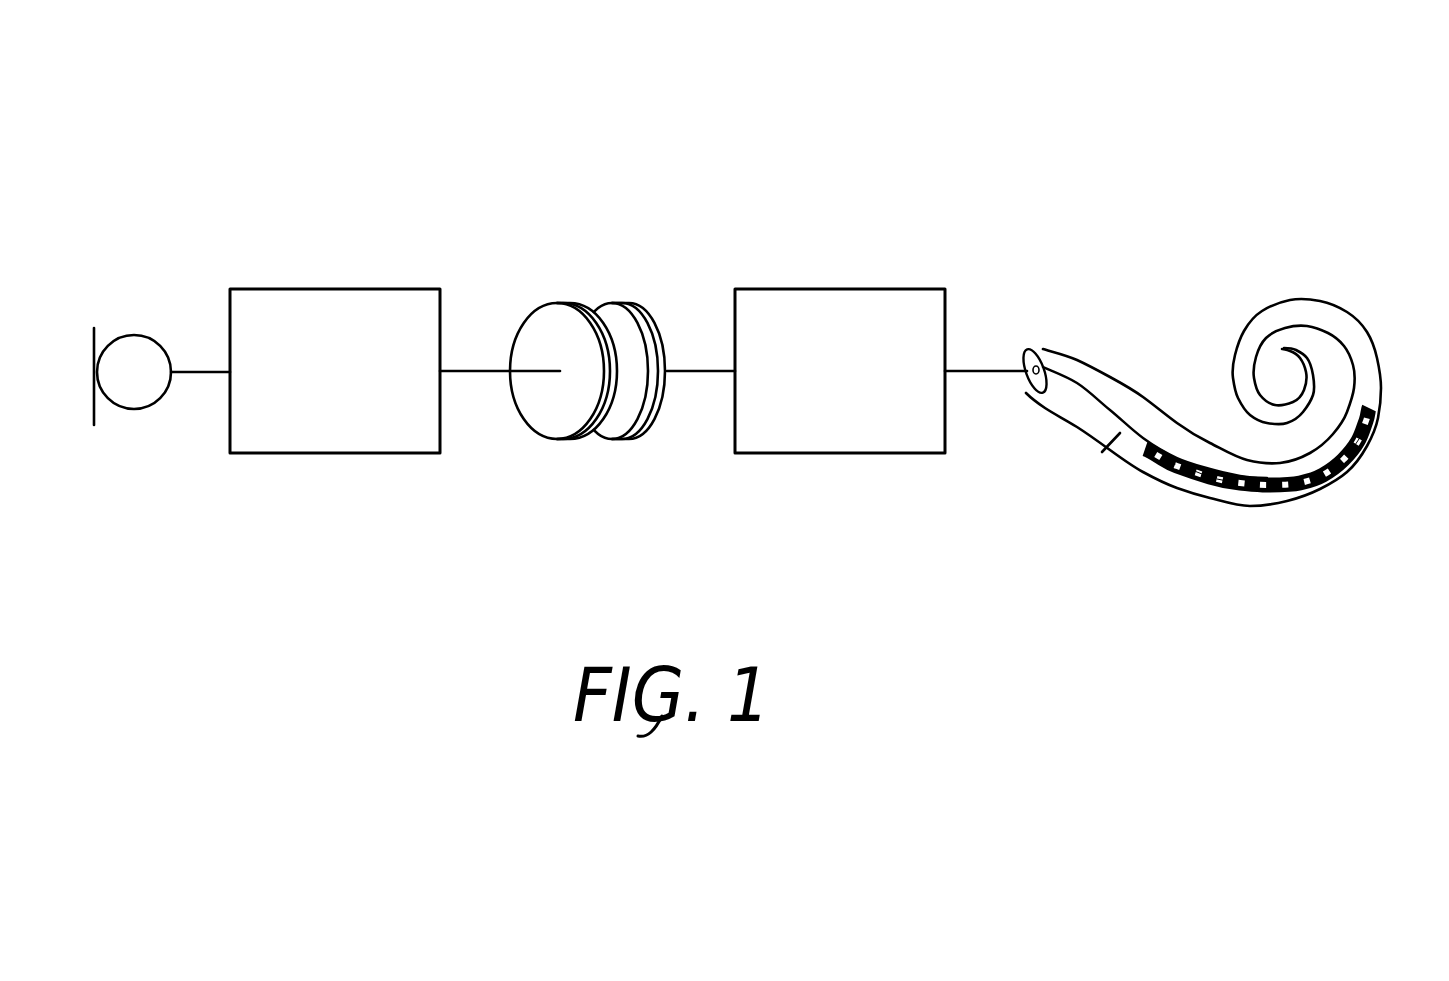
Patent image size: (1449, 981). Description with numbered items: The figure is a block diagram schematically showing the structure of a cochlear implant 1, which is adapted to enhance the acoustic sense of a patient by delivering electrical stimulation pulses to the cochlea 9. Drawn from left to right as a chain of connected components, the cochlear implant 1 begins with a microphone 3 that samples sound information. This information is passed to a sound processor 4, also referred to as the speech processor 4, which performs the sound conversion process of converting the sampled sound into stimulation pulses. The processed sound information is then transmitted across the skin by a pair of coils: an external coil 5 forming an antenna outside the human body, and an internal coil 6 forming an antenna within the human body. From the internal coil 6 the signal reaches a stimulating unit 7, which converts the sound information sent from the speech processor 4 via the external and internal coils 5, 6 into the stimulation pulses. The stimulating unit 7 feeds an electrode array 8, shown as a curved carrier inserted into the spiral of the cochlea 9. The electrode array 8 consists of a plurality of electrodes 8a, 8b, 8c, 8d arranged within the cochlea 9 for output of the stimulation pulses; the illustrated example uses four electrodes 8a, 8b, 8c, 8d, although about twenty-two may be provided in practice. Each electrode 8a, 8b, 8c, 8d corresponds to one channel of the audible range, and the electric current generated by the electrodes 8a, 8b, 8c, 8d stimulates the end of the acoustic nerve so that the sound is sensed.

The cochlear implant 1 is at (444, 185).
The microphone 3 is at (128, 413).
The sound processor 4 is at (335, 453).
The external coil 5 is at (557, 440).
The internal coil 6 is at (607, 440).
The stimulating unit 7 is at (818, 453).
The electrode array 8 is at (1103, 452).
The electrode 8a is at (1170, 474).
The electrode 8b is at (1193, 491).
The electrode 8c is at (1217, 492).
The electrode 8d is at (1354, 452).
The cochlea 9 is at (1365, 329).